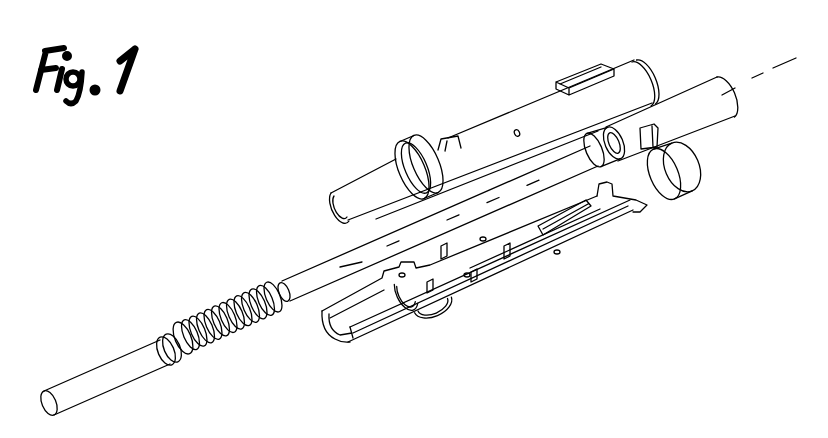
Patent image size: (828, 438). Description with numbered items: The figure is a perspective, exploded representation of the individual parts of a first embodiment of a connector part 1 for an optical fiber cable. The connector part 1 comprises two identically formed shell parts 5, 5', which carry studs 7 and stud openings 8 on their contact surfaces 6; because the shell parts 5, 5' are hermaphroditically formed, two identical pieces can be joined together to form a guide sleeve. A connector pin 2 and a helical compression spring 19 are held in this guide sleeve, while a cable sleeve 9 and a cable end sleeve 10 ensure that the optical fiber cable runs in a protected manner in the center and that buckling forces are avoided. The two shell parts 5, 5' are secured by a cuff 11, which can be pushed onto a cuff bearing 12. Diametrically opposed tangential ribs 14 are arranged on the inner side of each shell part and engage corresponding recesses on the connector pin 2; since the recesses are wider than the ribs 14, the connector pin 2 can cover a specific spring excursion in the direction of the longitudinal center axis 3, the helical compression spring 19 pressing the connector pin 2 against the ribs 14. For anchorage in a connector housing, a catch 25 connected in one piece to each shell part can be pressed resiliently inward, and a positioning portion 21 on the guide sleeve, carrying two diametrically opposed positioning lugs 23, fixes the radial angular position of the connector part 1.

The connector part 1 is at (232, 111).
The connector pin 2 is at (712, 112).
The longitudinal center axis 3 is at (772, 74).
The shell part 5 is at (491, 133).
The shell part 5' is at (537, 276).
The contact surface 6 is at (361, 341).
The stud 7 is at (410, 320).
The stud opening 8 is at (477, 282).
The cable sleeve 9 is at (317, 272).
The cable end sleeve 10 is at (93, 378).
The cuff 11 is at (690, 200).
The cuff bearing 12 is at (628, 58).
The tangential rib 14 is at (607, 228).
The helical compression spring 19 is at (221, 302).
The positioning portion 21 is at (425, 137).
The positioning lug 23 is at (447, 139).
The catch 25 is at (576, 70).